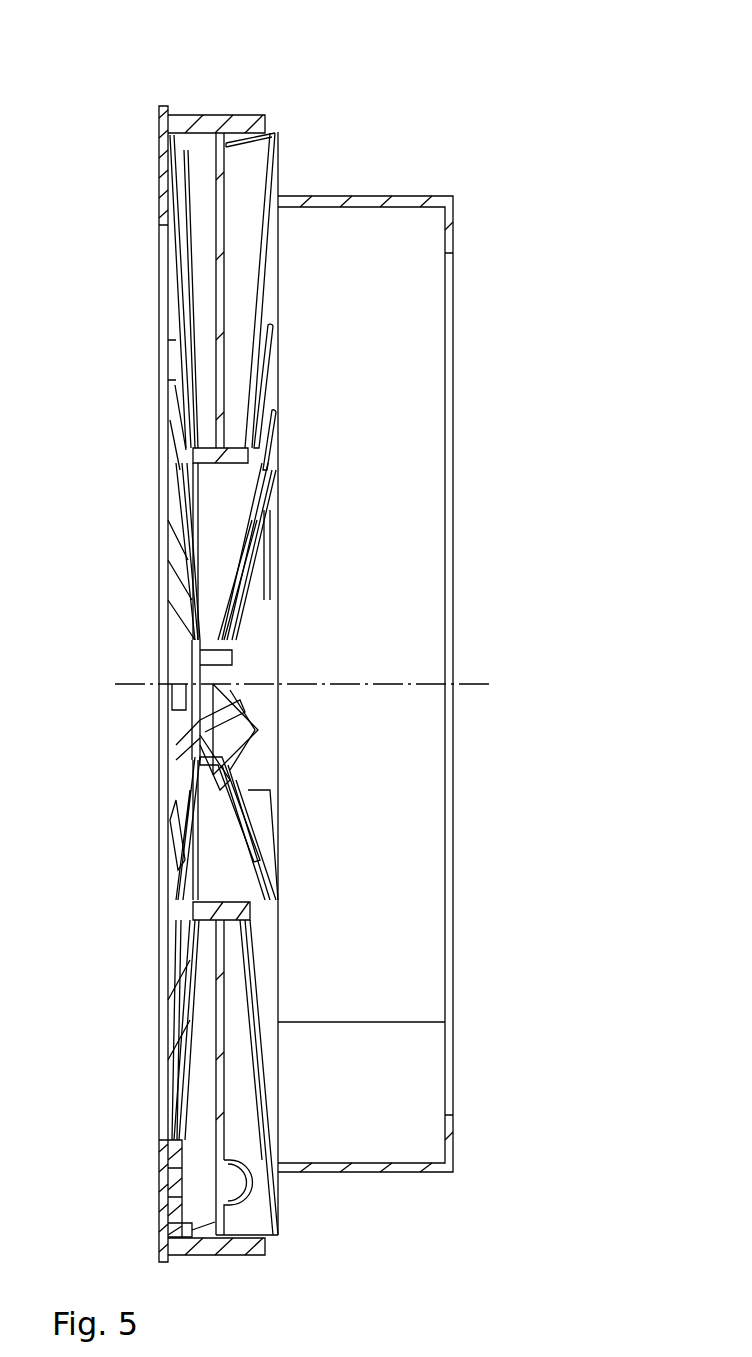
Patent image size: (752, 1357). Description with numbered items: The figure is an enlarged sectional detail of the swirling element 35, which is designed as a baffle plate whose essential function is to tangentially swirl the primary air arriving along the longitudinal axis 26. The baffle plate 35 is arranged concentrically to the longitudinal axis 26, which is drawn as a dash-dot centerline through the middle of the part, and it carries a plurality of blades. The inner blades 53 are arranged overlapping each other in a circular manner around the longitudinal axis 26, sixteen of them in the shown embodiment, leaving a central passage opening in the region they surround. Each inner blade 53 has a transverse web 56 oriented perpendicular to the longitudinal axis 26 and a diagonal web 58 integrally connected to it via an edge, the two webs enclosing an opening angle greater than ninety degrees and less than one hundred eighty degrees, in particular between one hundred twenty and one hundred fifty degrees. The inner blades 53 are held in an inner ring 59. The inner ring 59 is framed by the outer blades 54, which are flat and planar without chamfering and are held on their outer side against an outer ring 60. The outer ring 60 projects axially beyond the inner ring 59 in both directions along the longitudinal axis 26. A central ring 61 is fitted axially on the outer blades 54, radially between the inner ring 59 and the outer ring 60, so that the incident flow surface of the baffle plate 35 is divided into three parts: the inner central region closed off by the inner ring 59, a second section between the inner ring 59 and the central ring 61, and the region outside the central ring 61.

The swirling element 35 is at (313, 92).
The central ring 61 is at (372, 197).
The outer blades 54 is at (277, 367).
The inner blades 53 is at (258, 579).
The diagonal web 58 is at (195, 684).
The transverse web 56 is at (195, 757).
The inner ring 59 is at (195, 912).
The outer ring 60 is at (180, 1240).
The longitudinal axis 26 is at (400, 684).